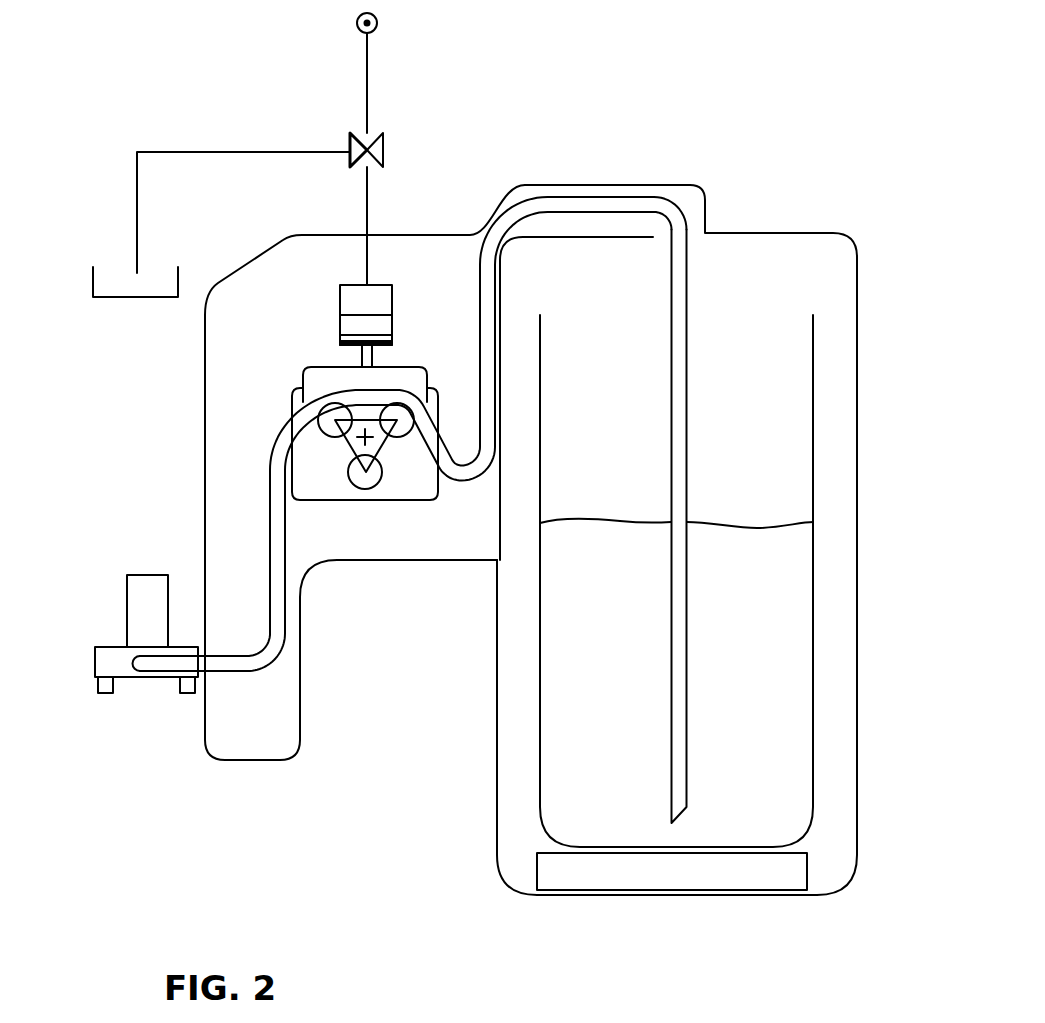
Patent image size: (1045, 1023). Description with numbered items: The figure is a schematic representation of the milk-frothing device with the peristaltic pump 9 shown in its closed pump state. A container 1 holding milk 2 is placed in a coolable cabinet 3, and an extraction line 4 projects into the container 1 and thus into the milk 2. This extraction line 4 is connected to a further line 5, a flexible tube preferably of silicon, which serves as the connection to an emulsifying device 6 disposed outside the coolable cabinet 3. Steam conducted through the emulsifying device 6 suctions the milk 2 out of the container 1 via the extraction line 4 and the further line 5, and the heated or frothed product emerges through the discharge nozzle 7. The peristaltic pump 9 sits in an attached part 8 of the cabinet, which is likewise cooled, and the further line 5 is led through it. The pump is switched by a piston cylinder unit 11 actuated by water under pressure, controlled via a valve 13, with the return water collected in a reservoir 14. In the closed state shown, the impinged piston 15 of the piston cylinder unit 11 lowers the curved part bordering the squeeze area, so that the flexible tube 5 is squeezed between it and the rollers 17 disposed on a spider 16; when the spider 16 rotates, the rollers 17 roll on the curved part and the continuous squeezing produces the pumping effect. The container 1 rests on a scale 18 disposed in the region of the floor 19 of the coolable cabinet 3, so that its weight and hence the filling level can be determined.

The container 1 is at (815, 390).
The milk 2 is at (773, 603).
The coolable cabinet 3 is at (858, 318).
The extraction line 4 is at (683, 698).
The further line 5 is at (285, 432).
The emulsifying device 6 is at (117, 622).
The discharge nozzle 7 is at (104, 694).
The attached part 8 is at (205, 408).
The peristaltic pump 9 is at (284, 383).
The piston cylinder unit 11 is at (352, 302).
The valve 13 is at (385, 150).
The reservoir 14 is at (93, 277).
The piston 15 is at (352, 325).
The spider 16 is at (352, 462).
The rollers 17 is at (335, 437).
The scale 18 is at (735, 872).
The floor 19 is at (640, 895).